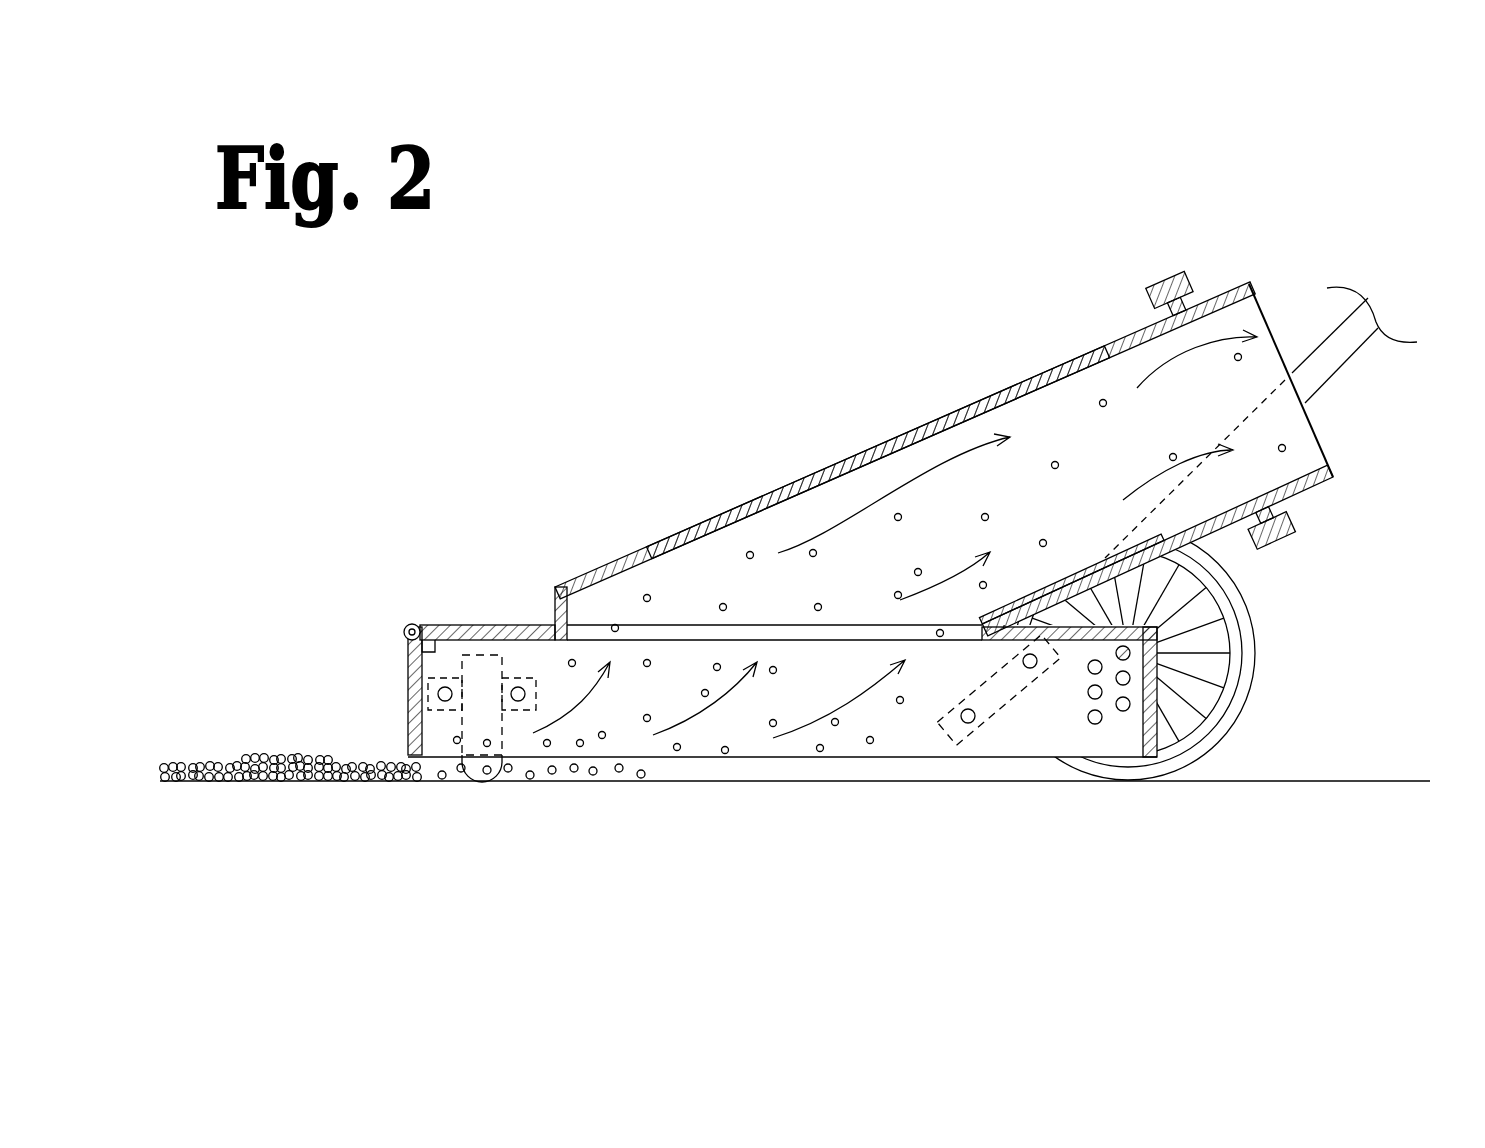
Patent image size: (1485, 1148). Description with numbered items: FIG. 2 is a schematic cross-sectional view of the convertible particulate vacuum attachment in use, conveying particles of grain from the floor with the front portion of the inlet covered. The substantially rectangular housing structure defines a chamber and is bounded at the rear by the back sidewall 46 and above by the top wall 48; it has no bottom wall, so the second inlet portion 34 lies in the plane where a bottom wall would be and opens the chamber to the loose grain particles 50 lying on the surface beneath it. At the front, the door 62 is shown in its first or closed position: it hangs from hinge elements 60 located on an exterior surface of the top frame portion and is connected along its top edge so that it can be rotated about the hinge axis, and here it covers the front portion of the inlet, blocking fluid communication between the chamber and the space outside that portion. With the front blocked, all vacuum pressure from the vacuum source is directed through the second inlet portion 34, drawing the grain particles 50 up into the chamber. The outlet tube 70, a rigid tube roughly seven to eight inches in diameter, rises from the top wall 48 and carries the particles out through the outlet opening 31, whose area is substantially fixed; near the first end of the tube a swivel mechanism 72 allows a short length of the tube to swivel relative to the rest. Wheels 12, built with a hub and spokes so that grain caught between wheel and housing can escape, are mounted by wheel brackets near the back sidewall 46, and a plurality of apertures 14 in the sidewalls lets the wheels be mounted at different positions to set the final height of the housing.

The wheels 12 is at (1258, 633).
The apertures 14 is at (1078, 722).
The outlet opening 31 is at (1347, 436).
The second inlet portion 34 is at (886, 783).
The back sidewall 46 is at (1155, 712).
The top wall 48 is at (487, 625).
The grain particles 50 is at (292, 727).
The hinge elements 60 is at (407, 622).
The door 62 is at (405, 700).
The outlet tube 70 is at (823, 477).
The swivel mechanism 72 is at (1165, 283).